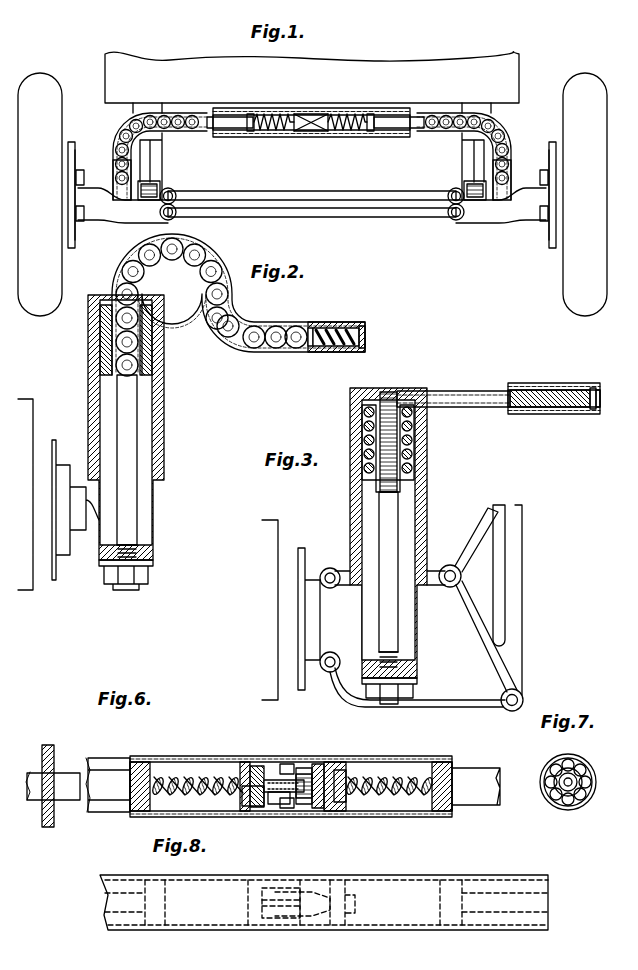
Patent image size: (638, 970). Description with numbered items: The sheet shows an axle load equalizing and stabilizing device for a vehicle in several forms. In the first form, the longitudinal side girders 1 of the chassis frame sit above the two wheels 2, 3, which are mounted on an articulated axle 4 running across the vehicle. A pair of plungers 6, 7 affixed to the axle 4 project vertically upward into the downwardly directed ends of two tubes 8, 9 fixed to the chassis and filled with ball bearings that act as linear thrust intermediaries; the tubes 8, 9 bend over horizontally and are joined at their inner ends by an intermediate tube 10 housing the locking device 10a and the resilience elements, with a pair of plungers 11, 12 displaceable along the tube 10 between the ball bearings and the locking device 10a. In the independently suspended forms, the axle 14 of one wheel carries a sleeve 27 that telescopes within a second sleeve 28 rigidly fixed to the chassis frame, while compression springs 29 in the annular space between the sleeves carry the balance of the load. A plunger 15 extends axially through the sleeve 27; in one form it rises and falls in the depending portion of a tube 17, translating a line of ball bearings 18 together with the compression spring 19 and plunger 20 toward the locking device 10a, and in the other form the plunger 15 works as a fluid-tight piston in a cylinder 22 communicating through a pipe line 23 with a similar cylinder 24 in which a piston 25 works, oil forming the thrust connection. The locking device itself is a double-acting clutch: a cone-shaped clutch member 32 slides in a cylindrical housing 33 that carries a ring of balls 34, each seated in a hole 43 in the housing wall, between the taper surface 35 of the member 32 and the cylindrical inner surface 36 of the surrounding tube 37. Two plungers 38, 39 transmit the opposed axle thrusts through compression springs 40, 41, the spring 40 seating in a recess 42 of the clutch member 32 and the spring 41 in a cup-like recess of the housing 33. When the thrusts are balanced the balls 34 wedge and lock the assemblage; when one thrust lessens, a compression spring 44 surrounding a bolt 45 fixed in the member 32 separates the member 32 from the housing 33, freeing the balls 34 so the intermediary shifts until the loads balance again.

In FIG. 1, the longitudinal side girders 1 is at (155, 140).
In FIG. 1, the wheel 2 is at (54, 258).
In FIG. 1, the wheel 3 is at (572, 258).
In FIG. 1, the articulated axle 4 is at (238, 214).
In FIG. 1, the plunger 6 is at (120, 180).
In FIG. 1, the plunger 7 is at (508, 190).
In FIG. 1, the tube 8 is at (118, 142).
In FIG. 1, the tube 9 is at (508, 148).
In FIG. 1, the intermediate tube 10 is at (295, 138).
In FIG. 1, the locking device 10a is at (330, 138).
In FIG. 2, the locking device 10a is at (364, 352).
In FIG. 1, the plunger 11 is at (224, 125).
In FIG. 1, the plunger 12 is at (394, 125).
In FIG. 2, the axle 14 is at (64, 520).
In FIG. 3, the axle 14 is at (312, 648).
In FIG. 2, the plunger 15 is at (126, 450).
In FIG. 3, the plunger 15 is at (388, 520).
In FIG. 2, the tube 17 is at (205, 312).
In FIG. 2, the ball bearings 18 is at (186, 262).
In FIG. 2, the compression spring 19 is at (322, 352).
In FIG. 2, the plunger 20 is at (312, 326).
In FIG. 3, the cylinder 22 is at (400, 527).
In FIG. 3, the pipe line 23 is at (456, 407).
In FIG. 3, the cylinder 24 is at (542, 388).
In FIG. 3, the piston 25 is at (593, 388).
In FIG. 2, the sleeve 27 is at (148, 507).
In FIG. 3, the sleeve 27 is at (412, 622).
In FIG. 2, the second sleeve 28 is at (98, 378).
In FIG. 3, the second sleeve 28 is at (354, 556).
In FIG. 2, the compression springs 29 is at (152, 345).
In FIG. 3, the compression springs 29 is at (414, 455).
In FIG. 6, the clutch member 32 is at (262, 770).
In FIG. 7, the clutch member 32 is at (555, 778).
In FIG. 8, the clutch member 32 is at (288, 890).
In FIG. 6, the housing 33 is at (337, 764).
In FIG. 8, the housing 33 is at (360, 928).
In FIG. 6, the ring of balls 34 is at (310, 806).
In FIG. 7, the ring of balls 34 is at (575, 776).
In FIG. 6, the taper surface 35 is at (284, 782).
In FIG. 8, the taper surface 35 is at (283, 918).
In FIG. 6, the cylindrical inner surface 36 is at (318, 766).
In FIG. 7, the cylindrical inner surface 36 is at (577, 810).
In FIG. 8, the cylindrical inner surface 36 is at (200, 925).
In FIG. 6, the tube 37 is at (378, 758).
In FIG. 8, the tube 37 is at (218, 878).
In FIG. 6, the plunger 38 is at (478, 785).
In FIG. 8, the plunger 38 is at (486, 908).
In FIG. 6, the plunger 39 is at (109, 785).
In FIG. 8, the plunger 39 is at (118, 898).
In FIG. 1, the compression spring 40 is at (277, 115).
In FIG. 6, the compression spring 40 is at (195, 772).
In FIG. 1, the compression spring 41 is at (347, 115).
In FIG. 6, the compression spring 41 is at (402, 798).
In FIG. 6, the recess 42 is at (248, 806).
In FIG. 8, the recess 42 is at (258, 882).
In FIG. 7, the hole 43 is at (590, 790).
In FIG. 8, the hole 43 is at (322, 888).
In FIG. 6, the compression spring 44 is at (276, 804).
In FIG. 6, the bolt 45 is at (340, 806).
In FIG. 7, the bolt 45 is at (554, 790).